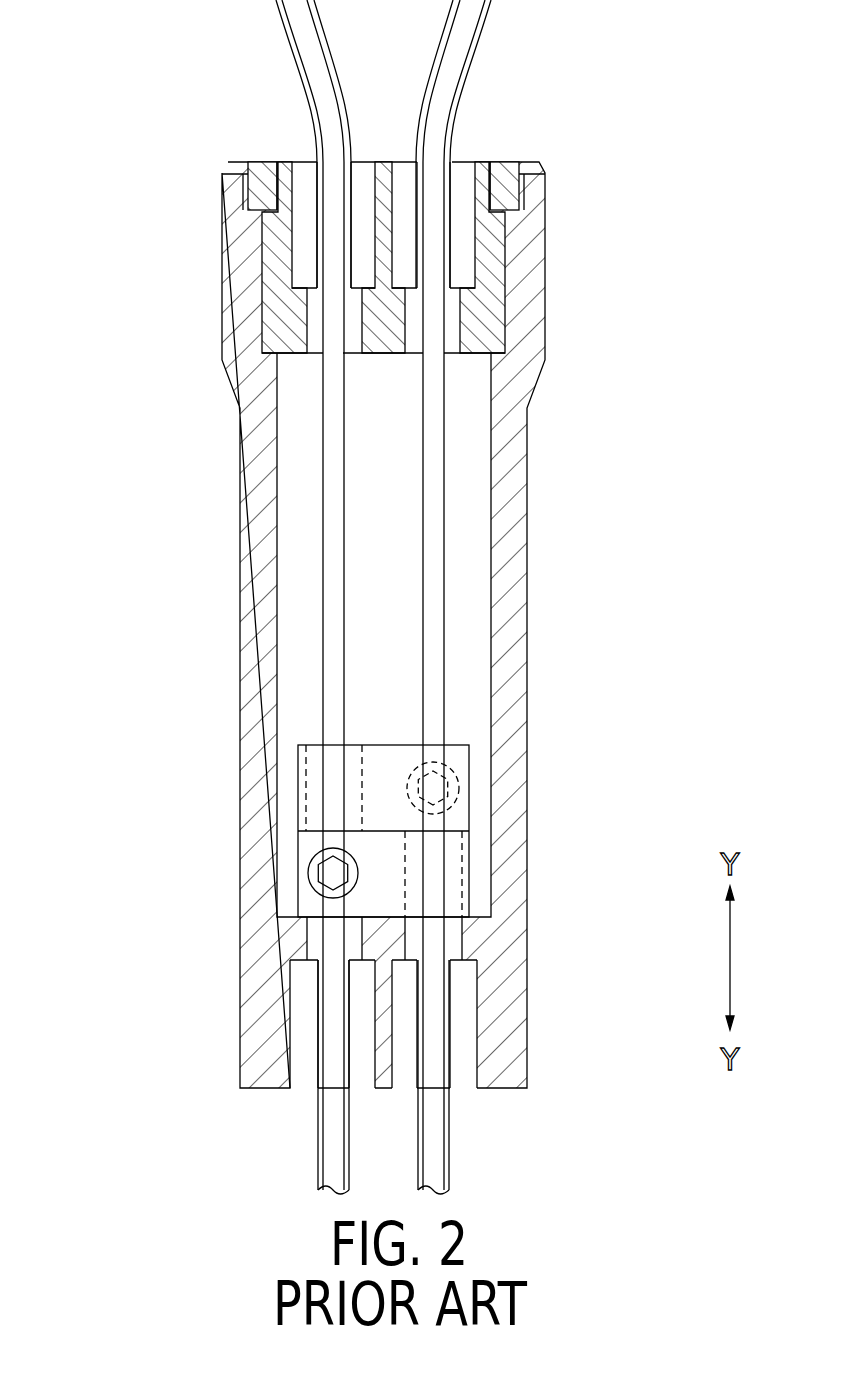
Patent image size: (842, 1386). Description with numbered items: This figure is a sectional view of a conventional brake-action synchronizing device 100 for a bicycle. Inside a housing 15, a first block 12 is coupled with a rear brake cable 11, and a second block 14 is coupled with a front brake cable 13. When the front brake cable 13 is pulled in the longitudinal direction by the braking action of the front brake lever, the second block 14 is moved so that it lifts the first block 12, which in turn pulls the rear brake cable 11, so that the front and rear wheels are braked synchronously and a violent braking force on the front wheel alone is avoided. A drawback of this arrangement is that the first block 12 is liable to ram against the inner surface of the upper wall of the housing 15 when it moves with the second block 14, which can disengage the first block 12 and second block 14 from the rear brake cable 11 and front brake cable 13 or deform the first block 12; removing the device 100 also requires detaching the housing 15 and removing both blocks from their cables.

The brake-action synchronizing device 100 is at (597, 194).
The housing 15 is at (220, 332).
The front brake cable 13 is at (332, 503).
The rear brake cable 11 is at (432, 505).
The first block 12 is at (460, 757).
The second block 14 is at (308, 855).